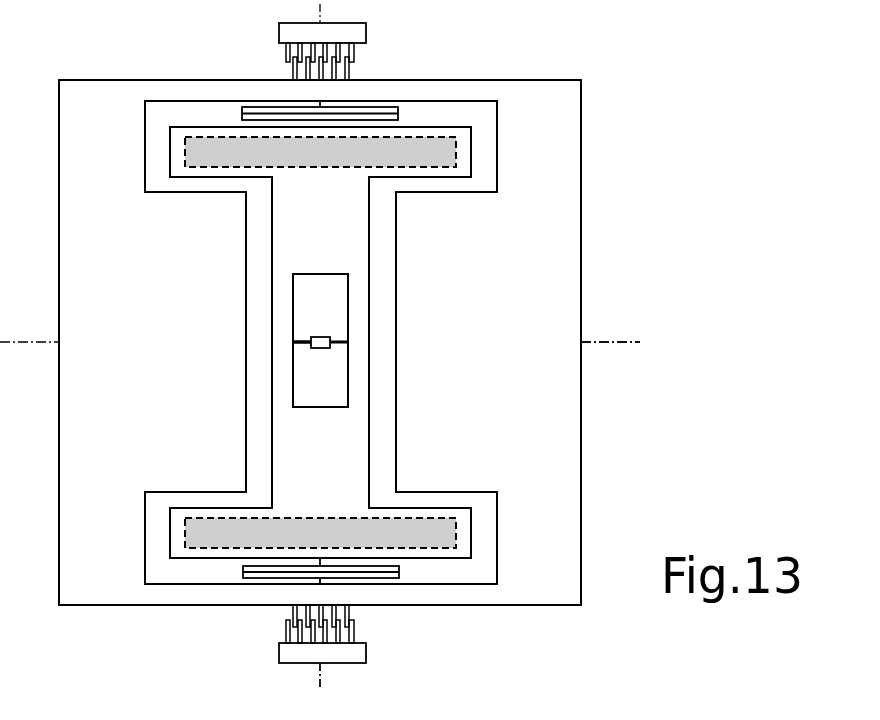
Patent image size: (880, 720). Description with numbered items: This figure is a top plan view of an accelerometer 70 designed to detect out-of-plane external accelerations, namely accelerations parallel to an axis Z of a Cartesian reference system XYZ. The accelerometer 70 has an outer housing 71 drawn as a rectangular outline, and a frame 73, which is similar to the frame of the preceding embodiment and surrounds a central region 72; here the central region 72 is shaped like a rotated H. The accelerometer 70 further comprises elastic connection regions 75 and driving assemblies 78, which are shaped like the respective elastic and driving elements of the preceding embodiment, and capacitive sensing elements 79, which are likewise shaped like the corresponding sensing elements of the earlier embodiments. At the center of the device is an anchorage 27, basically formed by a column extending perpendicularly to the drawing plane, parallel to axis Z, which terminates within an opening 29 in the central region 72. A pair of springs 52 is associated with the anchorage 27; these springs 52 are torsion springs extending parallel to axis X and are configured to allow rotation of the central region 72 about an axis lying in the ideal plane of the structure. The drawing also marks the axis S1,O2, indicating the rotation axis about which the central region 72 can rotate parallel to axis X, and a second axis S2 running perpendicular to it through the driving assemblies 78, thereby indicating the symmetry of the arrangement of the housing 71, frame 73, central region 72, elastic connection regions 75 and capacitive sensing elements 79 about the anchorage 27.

The accelerometer 70 is at (630, 130).
The housing / frame 71 is at (513, 79).
The central region 72 is at (330, 231).
The frame 73 is at (537, 291).
The elastic connection regions 75 is at (405, 112).
The driving assemblies 78 is at (267, 50).
The capacitive sensing elements 79 is at (238, 168).
The anchorage 27 is at (300, 340).
The opening 29 is at (333, 395).
The springs 52 is at (337, 338).
The first symmetry axis / optical axis S1,O2 is at (610, 342).
The second symmetry axis S2 is at (320, 678).